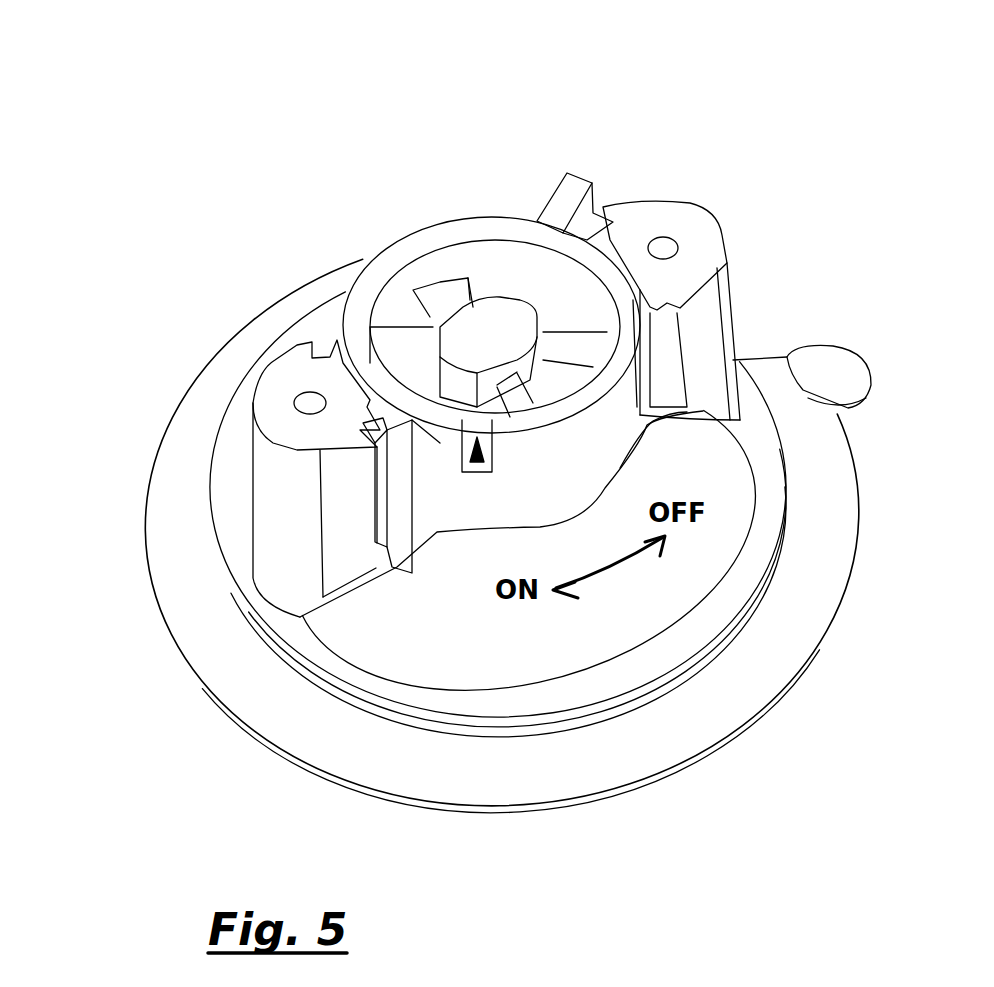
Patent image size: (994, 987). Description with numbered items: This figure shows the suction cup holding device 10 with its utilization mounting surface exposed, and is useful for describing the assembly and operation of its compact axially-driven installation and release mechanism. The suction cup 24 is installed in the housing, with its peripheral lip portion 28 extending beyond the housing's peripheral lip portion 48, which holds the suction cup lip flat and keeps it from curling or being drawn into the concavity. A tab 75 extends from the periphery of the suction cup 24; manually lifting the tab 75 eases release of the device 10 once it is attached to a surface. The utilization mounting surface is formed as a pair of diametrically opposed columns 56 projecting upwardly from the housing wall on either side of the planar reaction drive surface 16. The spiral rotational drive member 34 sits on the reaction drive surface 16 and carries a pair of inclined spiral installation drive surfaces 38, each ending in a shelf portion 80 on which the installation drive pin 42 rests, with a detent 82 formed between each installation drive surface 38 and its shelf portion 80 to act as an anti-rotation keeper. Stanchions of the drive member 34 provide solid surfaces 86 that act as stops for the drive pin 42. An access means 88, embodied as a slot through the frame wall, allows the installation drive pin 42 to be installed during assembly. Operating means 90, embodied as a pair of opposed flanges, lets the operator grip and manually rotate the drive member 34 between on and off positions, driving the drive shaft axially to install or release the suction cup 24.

The suction cup holding device 10 is at (717, 70).
The reaction drive surface 16 is at (665, 415).
The suction cup 24 is at (167, 633).
The peripheral lip portion 28 is at (180, 560).
The rotational drive member 34 is at (387, 247).
The spiral axial installation drive surfaces 38 is at (533, 297).
The installation drive pin 42 is at (447, 287).
The peripheral lip portion 48 is at (230, 497).
The columns 56 is at (730, 270).
The tab 75 is at (823, 343).
The shelf portion 80 is at (385, 270).
The detent 82 is at (467, 300).
The solid surfaces 86 is at (560, 373).
The access means 88 is at (477, 462).
The operating means 90 is at (597, 200).